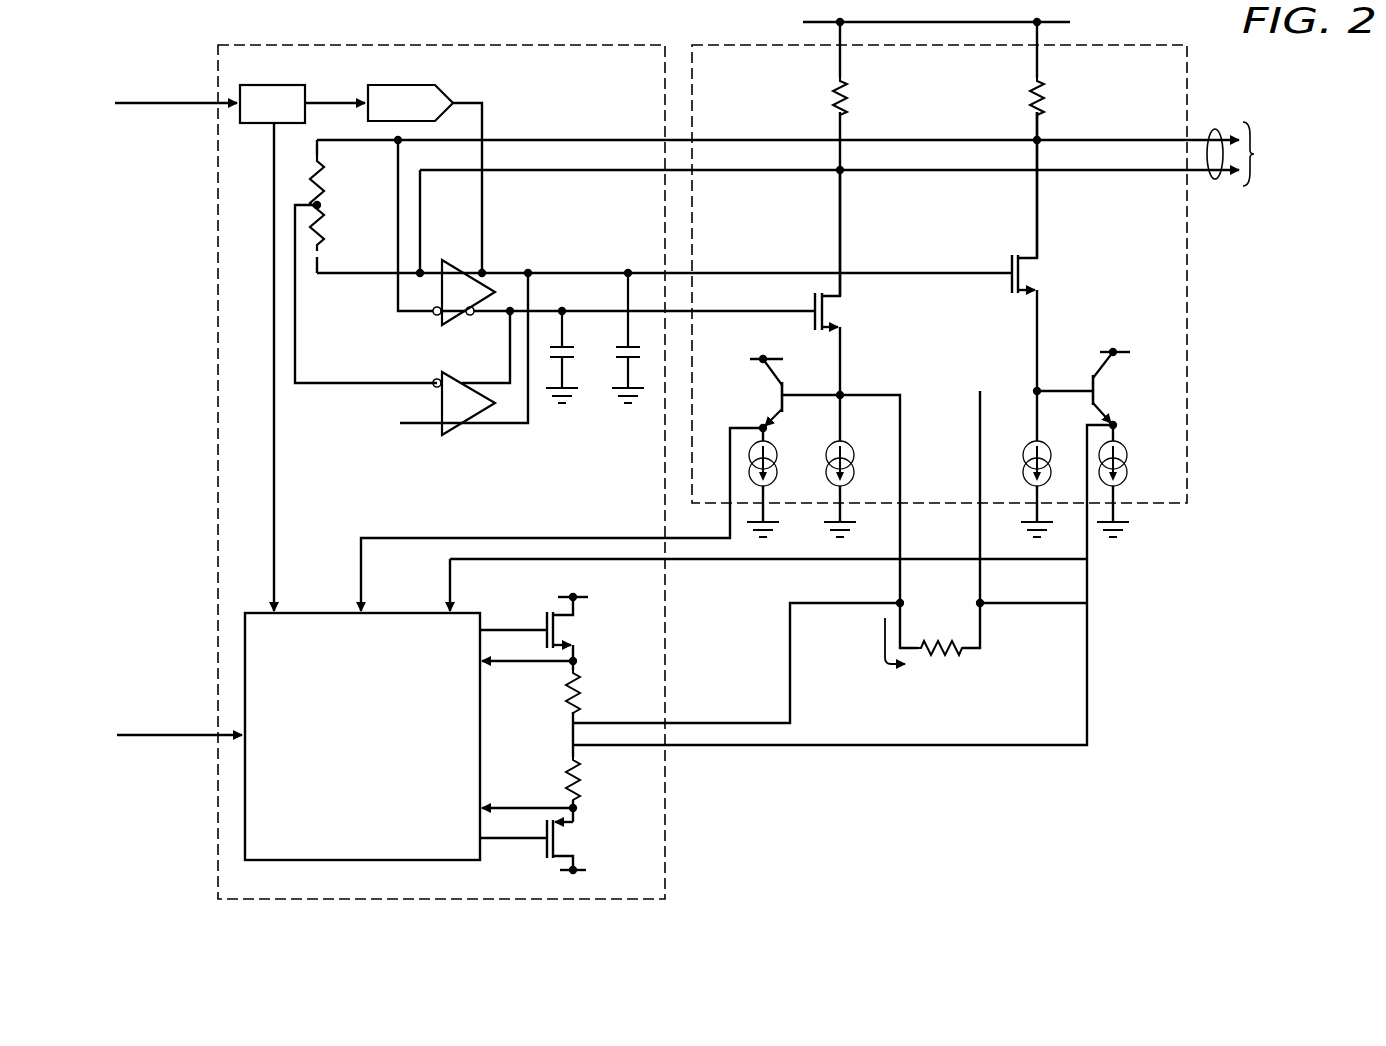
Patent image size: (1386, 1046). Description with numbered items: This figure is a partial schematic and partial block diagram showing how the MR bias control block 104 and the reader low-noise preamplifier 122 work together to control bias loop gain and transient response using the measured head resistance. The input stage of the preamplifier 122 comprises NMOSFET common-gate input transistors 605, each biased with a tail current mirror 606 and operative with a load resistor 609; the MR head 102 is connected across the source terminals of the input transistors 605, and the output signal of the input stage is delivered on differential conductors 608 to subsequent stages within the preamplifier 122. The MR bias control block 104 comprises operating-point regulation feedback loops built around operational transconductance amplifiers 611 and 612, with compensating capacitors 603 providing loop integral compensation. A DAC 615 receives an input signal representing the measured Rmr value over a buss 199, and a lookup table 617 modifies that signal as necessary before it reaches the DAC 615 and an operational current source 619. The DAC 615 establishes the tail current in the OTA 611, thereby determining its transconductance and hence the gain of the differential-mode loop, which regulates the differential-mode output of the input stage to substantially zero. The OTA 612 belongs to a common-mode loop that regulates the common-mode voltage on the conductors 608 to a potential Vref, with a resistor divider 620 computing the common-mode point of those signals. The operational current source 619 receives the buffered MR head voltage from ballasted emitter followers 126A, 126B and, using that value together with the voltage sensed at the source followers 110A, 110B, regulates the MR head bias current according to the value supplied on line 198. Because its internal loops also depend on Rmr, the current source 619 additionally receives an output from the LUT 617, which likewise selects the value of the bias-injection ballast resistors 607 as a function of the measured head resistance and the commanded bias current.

The MR head 102 is at (933, 638).
The MR bias control block 104 is at (218, 371).
The source follower 110A is at (565, 638).
The source follower 110B is at (565, 843).
The reader low-noise preamplifier 122 is at (1187, 270).
The ballasted emitter follower 126A is at (1103, 390).
The ballasted emitter follower 126B is at (776, 395).
The line 198 is at (178, 729).
The buss 199 is at (163, 112).
The capacitors 603 is at (609, 348).
The NMOSFET common-gate input transistors 605 is at (1010, 283).
The tail current mirror 606 is at (869, 433).
The ballast resistor 607 is at (570, 697).
The differential conductors 608 is at (1216, 129).
The load resistor 609 is at (1023, 100).
The operational transconductance amplifier 611 is at (458, 260).
The operational transconductance amplifier 612 is at (440, 372).
The DAC 615 is at (398, 85).
The lookup table 617 is at (262, 85).
The operational current source 619 is at (316, 610).
The resistor divider 620 is at (330, 158).